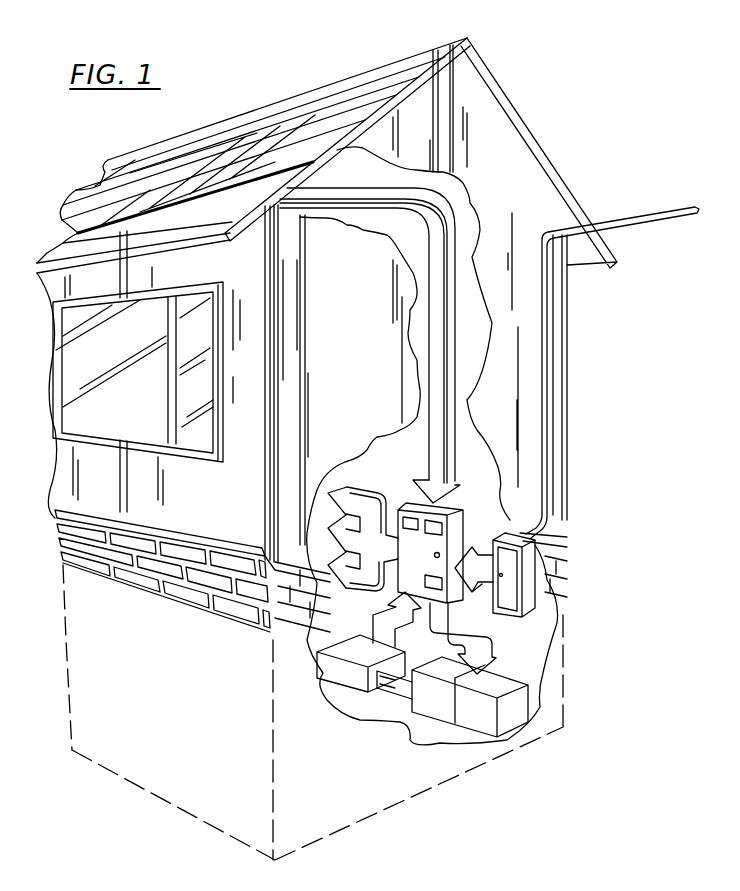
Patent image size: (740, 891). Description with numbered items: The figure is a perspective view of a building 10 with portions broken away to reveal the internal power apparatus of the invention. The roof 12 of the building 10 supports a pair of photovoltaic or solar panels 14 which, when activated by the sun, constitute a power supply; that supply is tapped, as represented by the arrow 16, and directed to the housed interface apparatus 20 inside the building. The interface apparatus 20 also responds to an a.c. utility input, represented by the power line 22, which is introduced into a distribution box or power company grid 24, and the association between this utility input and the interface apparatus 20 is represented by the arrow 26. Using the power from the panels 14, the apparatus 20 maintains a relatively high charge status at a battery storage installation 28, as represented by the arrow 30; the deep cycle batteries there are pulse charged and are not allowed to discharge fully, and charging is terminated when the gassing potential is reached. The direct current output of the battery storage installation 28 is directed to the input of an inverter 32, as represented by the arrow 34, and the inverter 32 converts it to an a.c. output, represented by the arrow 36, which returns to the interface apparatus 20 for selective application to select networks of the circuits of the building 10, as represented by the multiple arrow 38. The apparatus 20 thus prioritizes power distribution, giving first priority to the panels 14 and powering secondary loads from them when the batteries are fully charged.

The building 10 is at (531, 113).
The roof 12 is at (432, 53).
The photovoltaic or solar panels 14 is at (300, 113).
The arrow 16 is at (440, 328).
The interface apparatus 20 is at (455, 528).
The power line 22 is at (627, 212).
The distribution box or power company grid 24 is at (530, 583).
The arrow 26 is at (483, 583).
The battery storage installation 28 is at (495, 680).
The arrow 30 is at (447, 633).
The inverter 32 is at (345, 677).
The arrow 34 is at (402, 685).
The arrow 36 is at (373, 615).
The multiple arrow 38 is at (360, 503).